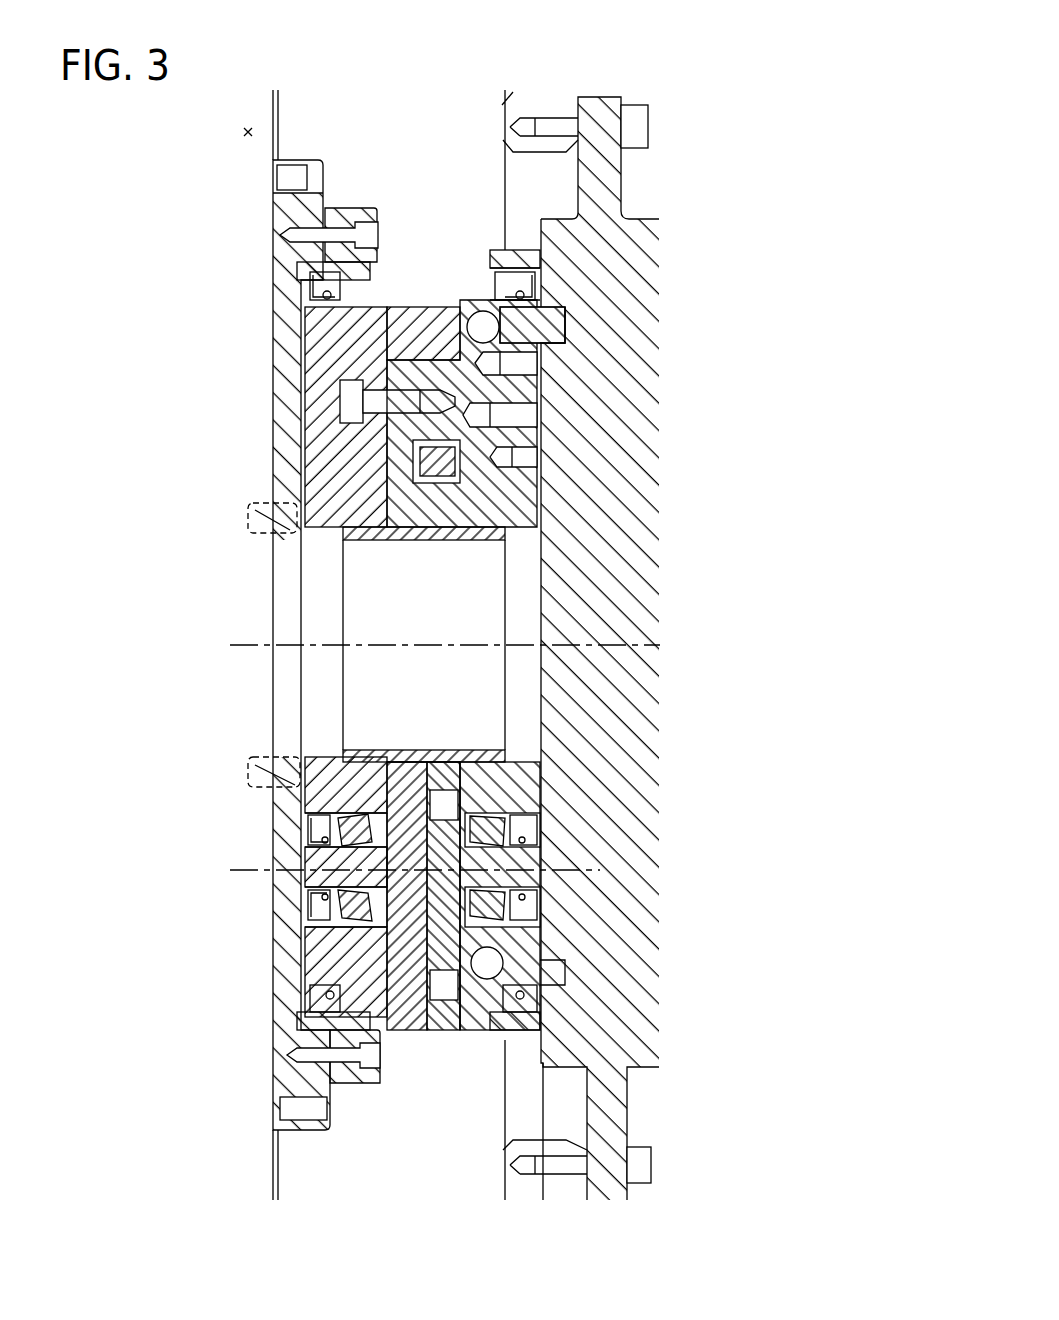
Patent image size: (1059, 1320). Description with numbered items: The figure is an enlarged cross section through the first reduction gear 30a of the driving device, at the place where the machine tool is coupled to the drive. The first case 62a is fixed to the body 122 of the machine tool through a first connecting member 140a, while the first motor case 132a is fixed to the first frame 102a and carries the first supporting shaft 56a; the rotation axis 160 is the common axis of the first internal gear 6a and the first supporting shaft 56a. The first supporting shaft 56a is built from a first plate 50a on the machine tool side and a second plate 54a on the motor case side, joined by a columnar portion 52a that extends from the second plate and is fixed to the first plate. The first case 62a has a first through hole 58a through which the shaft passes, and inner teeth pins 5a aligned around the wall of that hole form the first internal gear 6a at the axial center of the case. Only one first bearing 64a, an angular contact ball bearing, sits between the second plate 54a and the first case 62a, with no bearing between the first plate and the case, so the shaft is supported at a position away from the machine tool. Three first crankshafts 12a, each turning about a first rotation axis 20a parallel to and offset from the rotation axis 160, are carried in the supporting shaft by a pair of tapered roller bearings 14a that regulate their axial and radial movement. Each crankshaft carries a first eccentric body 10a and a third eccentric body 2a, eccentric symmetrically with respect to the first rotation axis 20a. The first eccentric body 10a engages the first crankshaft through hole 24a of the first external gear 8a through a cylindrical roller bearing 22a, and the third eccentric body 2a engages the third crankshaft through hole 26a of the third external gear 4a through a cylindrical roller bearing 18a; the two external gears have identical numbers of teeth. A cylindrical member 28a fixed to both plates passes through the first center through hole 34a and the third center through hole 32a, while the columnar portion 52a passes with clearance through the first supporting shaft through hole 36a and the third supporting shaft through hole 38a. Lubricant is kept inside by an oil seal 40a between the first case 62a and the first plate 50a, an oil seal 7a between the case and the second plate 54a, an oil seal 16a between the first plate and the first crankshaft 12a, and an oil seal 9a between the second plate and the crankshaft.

The body 122 is at (248, 128).
The first connecting member 140a is at (283, 205).
The oil seal 40a is at (328, 275).
The first through hole 58a is at (368, 323).
The first supporting shaft 56a is at (470, 264).
The first plate 50a is at (407, 380).
The columnar portion 52a is at (475, 328).
The second plate 54a is at (525, 307).
The first frame 102a is at (562, 112).
The first motor case 132a is at (622, 247).
The first case 62a is at (540, 263).
The first bearing 64a is at (540, 342).
The third supporting shaft through hole 38a is at (405, 453).
The first supporting shaft through hole 36a is at (410, 473).
The first center through hole 34a is at (403, 541).
The third center through hole 32a is at (443, 541).
The cylindrical member 28a is at (473, 541).
The rotation axis 160 is at (240, 645).
The third crankshaft through hole 26a is at (450, 800).
The first crankshaft through hole 24a is at (417, 760).
The cylindrical roller bearing 22a is at (385, 835).
The cylindrical roller bearing 18a is at (350, 832).
The oil seal 16a is at (318, 838).
The first rotation axis 20a is at (240, 870).
The first eccentric body 10a is at (403, 858).
The first crankshaft 12a is at (445, 885).
The pair of bearings 14a is at (455, 855).
The oil seal 9a is at (547, 928).
The oil seal 7a is at (540, 1032).
The first internal gear 6a is at (422, 1036).
The first external gear 8a is at (403, 1035).
The inner teeth pins 5a is at (430, 1036).
The third external gear 4a is at (445, 1036).
The third eccentric body 2a is at (465, 1036).
The first reduction gear 30a is at (368, 1134).